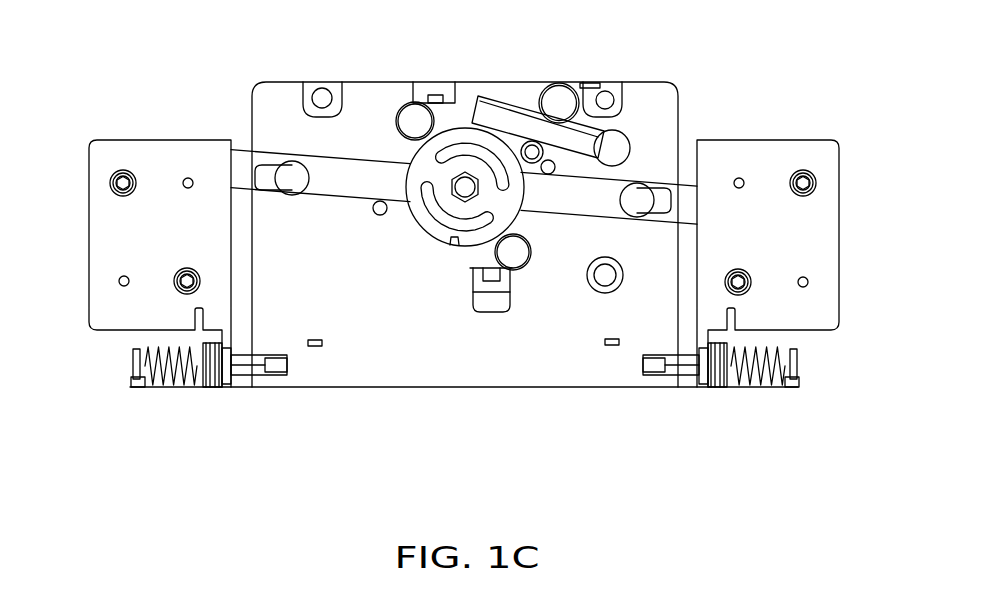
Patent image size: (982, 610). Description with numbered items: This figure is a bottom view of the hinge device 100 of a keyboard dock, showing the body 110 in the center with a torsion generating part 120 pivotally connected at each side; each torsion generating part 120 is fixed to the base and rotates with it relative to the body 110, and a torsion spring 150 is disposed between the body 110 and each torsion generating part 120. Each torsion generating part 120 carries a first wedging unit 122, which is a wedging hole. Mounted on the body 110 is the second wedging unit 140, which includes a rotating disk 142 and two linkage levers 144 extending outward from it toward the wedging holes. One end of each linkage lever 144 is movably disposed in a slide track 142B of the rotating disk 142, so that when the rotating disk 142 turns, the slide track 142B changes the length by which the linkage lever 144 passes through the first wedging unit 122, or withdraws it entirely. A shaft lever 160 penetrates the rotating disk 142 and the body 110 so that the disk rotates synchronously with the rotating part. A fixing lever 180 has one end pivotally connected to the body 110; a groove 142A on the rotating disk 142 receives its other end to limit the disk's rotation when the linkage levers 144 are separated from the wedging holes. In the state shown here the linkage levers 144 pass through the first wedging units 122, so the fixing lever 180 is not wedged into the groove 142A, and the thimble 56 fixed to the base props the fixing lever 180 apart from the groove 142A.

The hinge device 100 is at (852, 506).
The body 110 is at (612, 362).
The torsion generating part 120 is at (172, 150).
The first wedging unit 122 is at (700, 207).
The second wedging unit 140 is at (417, 444).
The rotating disk 142 is at (430, 233).
The groove 142A is at (455, 250).
The slide track 142B is at (462, 138).
The linkage lever 144 is at (347, 183).
The torsion spring 150 is at (757, 388).
The shaft lever 160 is at (470, 192).
The fixing lever 180 is at (510, 118).
The thimble 56 is at (534, 150).